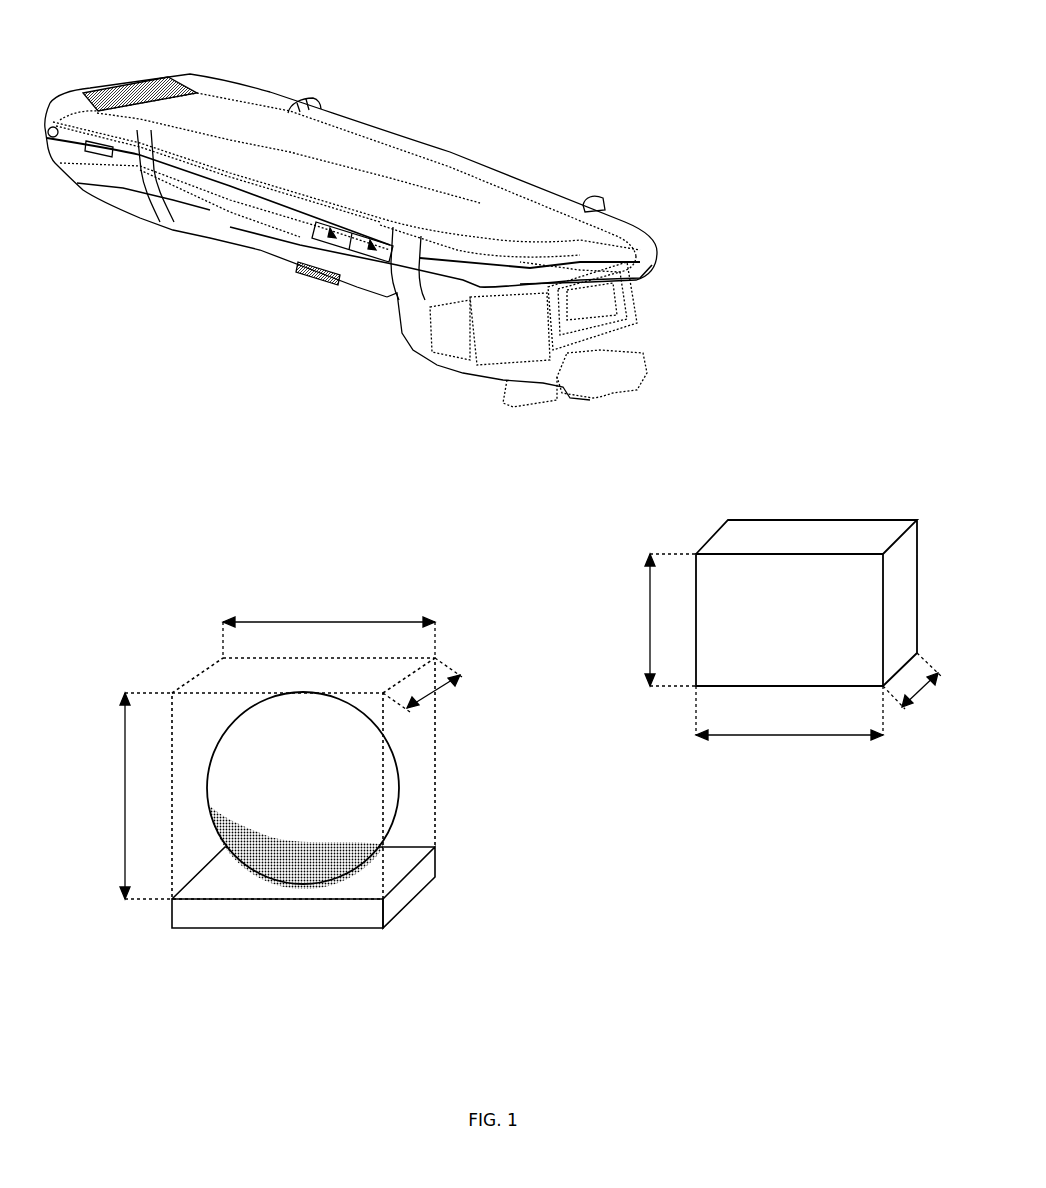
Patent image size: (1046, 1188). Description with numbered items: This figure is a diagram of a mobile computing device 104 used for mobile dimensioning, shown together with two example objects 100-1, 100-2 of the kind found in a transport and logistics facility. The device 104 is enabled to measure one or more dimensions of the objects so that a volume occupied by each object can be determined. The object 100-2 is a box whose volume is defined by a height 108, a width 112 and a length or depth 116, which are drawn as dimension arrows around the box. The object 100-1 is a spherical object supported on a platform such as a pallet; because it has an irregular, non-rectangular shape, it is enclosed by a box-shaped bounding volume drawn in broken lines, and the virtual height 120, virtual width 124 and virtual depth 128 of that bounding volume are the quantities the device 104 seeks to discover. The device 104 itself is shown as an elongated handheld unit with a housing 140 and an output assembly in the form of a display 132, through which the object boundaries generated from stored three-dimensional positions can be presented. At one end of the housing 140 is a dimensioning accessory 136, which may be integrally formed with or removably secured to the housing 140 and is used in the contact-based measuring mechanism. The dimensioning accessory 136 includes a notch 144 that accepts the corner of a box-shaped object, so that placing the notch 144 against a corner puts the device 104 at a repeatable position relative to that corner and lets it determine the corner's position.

The mobile computing device 104 is at (403, 245).
The display 132 is at (334, 180).
The housing 140 is at (214, 205).
The dimensioning accessory 136 is at (662, 273).
The notch 144 is at (625, 367).
The object 100-1 is at (289, 762).
The object 100-2 is at (823, 520).
The height 108 is at (651, 620).
The width 112 is at (789, 724).
The length or depth 116 is at (921, 683).
The virtual height 120 is at (126, 796).
The virtual width 124 is at (329, 627).
The virtual depth 128 is at (440, 685).